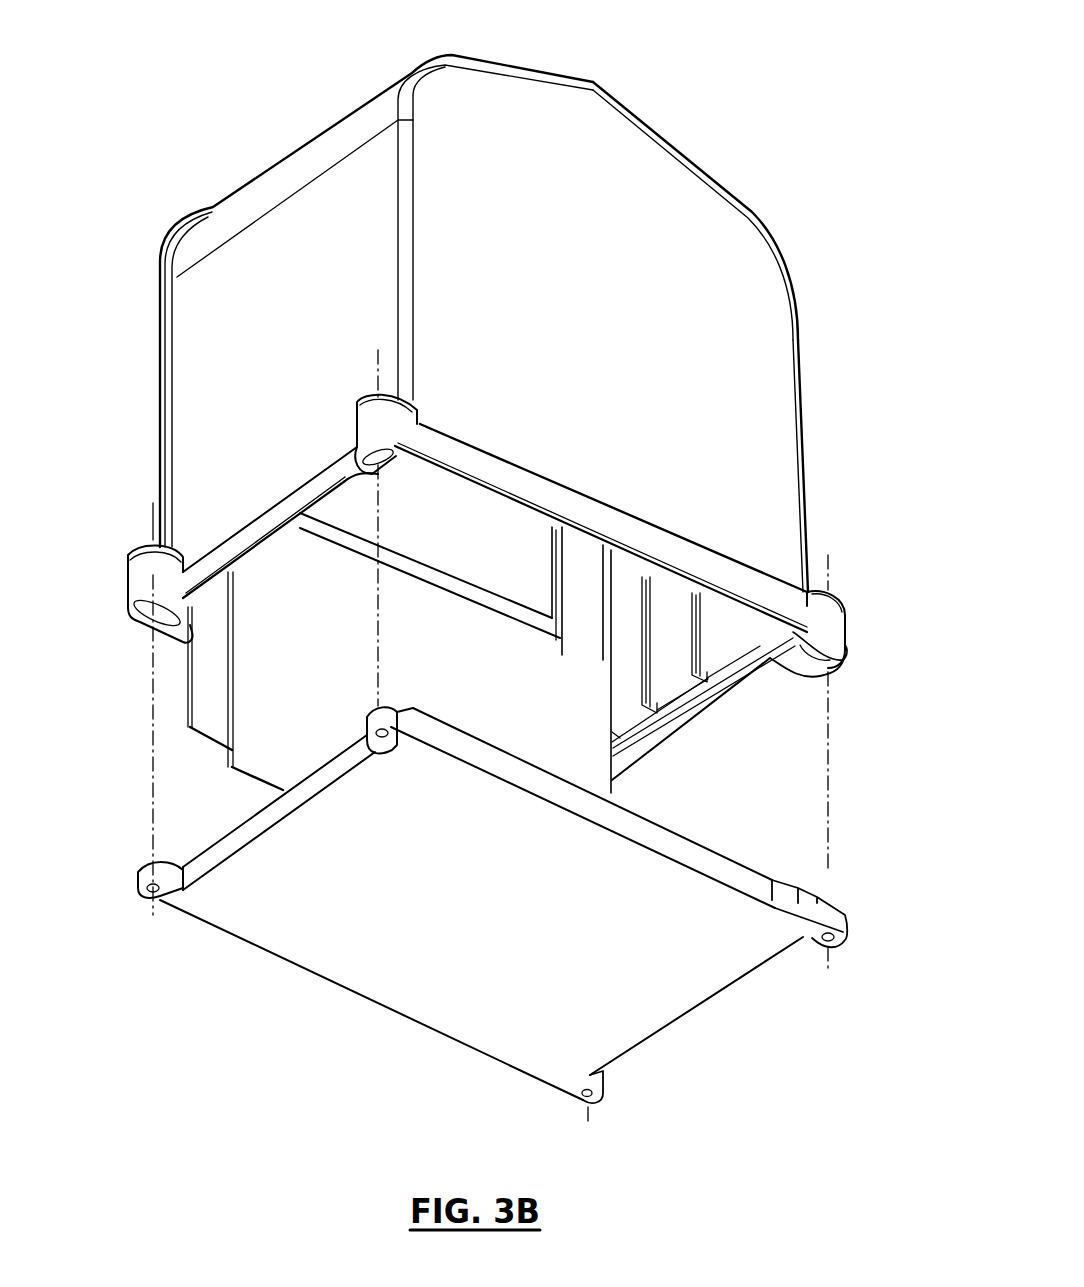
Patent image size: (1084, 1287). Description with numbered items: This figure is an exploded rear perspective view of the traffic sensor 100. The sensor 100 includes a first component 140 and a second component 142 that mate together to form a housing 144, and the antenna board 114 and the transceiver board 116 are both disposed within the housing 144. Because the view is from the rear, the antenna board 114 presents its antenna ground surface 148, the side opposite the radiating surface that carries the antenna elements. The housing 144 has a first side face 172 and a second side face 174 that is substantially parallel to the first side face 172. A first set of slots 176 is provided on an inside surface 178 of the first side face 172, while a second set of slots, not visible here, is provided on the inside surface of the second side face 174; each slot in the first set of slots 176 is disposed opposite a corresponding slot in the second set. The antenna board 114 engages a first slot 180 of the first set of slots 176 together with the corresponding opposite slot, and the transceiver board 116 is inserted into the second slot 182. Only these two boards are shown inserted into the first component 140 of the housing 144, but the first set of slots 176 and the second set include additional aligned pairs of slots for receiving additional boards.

The sensor 100 is at (266, 118).
The antenna board 114 is at (403, 548).
The transceiver board 116 is at (614, 790).
The first component 140 is at (803, 413).
The second component 142 is at (653, 1037).
The housing 144 is at (645, 185).
The antenna ground surface 148 is at (195, 698).
The first side face 172 is at (808, 482).
The second side face 174 is at (200, 390).
The first set of slots 176 is at (560, 530).
The inside surface 178 is at (670, 650).
The first slot 180 is at (548, 582).
The second slot 182 is at (600, 622).